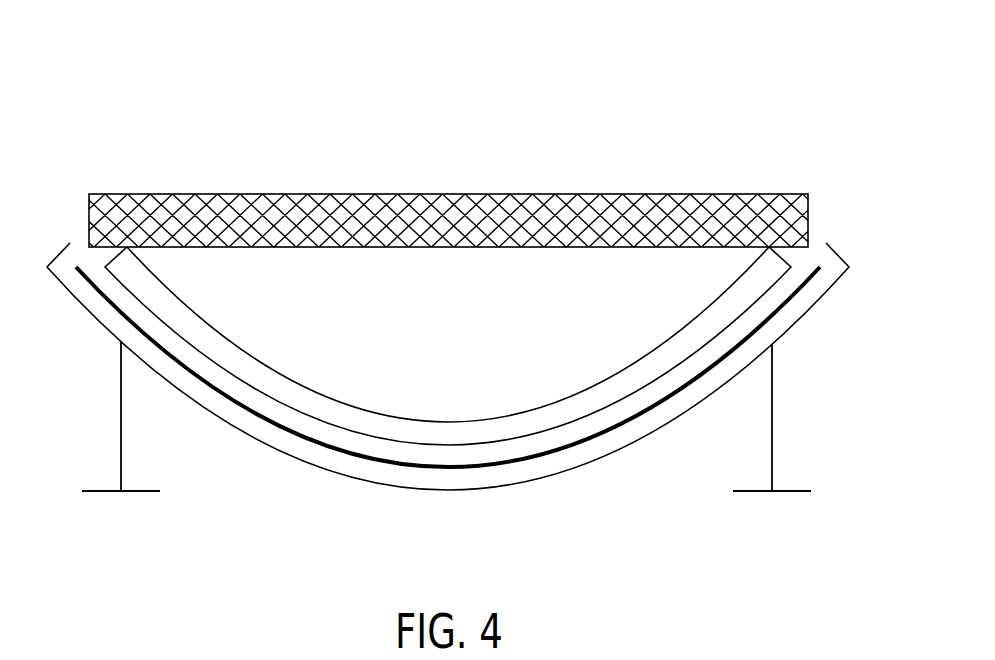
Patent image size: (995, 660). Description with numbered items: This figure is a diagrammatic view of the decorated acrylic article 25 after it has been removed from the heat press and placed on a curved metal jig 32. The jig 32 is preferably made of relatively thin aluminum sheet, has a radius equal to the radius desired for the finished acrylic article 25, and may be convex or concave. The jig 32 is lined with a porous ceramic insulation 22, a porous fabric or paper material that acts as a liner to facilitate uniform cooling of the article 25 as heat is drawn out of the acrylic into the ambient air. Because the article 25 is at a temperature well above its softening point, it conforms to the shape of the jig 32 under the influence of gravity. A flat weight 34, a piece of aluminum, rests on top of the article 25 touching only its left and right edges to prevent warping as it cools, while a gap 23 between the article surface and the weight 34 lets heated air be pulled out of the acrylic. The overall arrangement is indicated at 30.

The mirror assembly 30 is at (734, 88).
The flat weight 34 is at (583, 193).
The gap 23 is at (513, 358).
The article 25 is at (313, 389).
The porous ceramic insulation 22 is at (812, 270).
The curved metal jig 32 is at (772, 392).